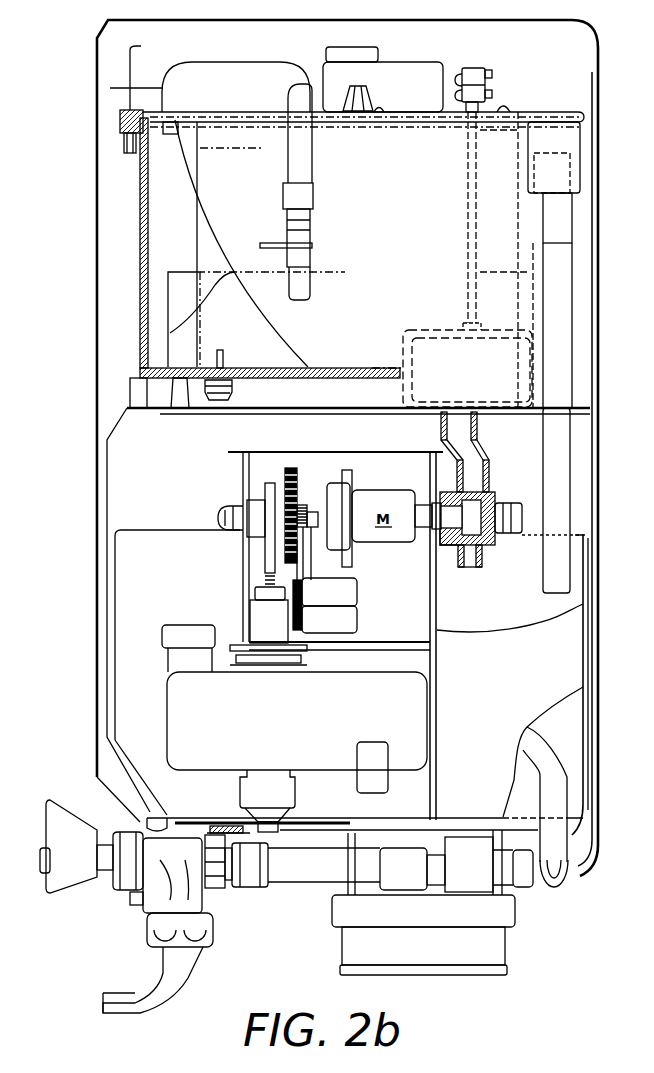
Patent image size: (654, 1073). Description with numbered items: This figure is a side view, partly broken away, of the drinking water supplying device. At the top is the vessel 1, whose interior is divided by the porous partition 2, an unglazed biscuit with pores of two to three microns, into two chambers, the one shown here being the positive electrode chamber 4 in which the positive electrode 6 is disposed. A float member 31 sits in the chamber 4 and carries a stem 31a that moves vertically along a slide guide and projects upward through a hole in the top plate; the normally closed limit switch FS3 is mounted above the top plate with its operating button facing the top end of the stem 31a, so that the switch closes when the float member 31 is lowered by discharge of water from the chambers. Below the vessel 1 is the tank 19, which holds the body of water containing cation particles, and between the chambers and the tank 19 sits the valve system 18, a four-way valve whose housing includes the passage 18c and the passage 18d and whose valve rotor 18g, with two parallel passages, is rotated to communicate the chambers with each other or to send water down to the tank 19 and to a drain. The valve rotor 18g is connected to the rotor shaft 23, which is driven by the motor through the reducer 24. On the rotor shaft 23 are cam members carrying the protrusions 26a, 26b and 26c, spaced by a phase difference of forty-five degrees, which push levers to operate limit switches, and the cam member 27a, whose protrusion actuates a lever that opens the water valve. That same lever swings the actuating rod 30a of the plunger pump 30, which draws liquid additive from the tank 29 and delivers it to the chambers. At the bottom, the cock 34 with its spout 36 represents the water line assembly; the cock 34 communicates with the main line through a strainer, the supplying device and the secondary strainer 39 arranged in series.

The vessel 1 is at (141, 262).
The porous partition 2 is at (197, 251).
The positive electrode chamber 4 is at (176, 217).
The positive electrode 6 is at (168, 302).
The limit switch FS3 is at (475, 75).
The stem 31a is at (468, 204).
The float member 31 is at (445, 343).
The cam member 27a is at (270, 483).
The rotor shaft 23 is at (248, 505).
The tank 19 is at (173, 540).
The reducer 24 is at (333, 492).
The protrusion 26b is at (305, 512).
The protrusion 26c is at (318, 520).
The protrusion 26a is at (304, 546).
The actuating rod 30a is at (257, 592).
The plunger pump 30 is at (270, 660).
The passage 18c is at (472, 479).
The valve system 18 is at (499, 555).
The valve rotor 18g is at (455, 547).
The passage 18d is at (471, 562).
The tank 29 is at (177, 718).
The cock 34 is at (130, 880).
The spout 36 is at (214, 930).
The secondary strainer 39 is at (505, 943).